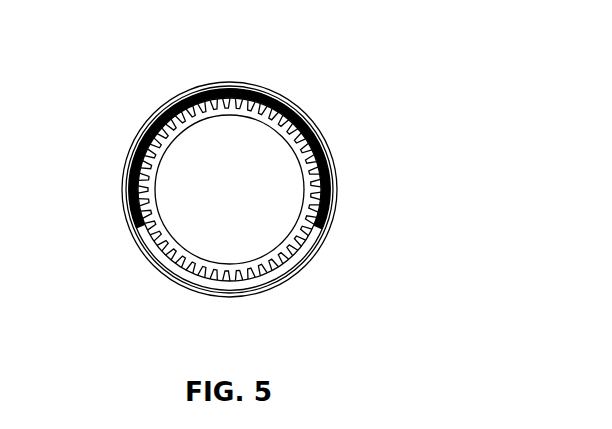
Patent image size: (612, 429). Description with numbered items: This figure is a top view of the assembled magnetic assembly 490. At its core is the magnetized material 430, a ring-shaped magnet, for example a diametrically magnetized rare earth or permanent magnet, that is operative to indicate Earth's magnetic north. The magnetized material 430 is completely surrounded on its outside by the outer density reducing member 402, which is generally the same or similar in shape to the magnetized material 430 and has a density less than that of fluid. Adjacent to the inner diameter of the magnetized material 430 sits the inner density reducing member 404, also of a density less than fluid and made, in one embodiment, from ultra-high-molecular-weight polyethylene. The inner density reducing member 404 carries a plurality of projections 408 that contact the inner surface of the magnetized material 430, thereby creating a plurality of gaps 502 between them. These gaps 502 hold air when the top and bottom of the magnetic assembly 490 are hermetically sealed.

The magnetic assembly 490 is at (269, 170).
The outer density reducing member 402 is at (282, 190).
The plurality of projections 408 is at (214, 110).
The plurality of gaps 502 is at (168, 133).
The inner density reducing member 404 is at (257, 255).
The magnetized material 430 is at (190, 278).